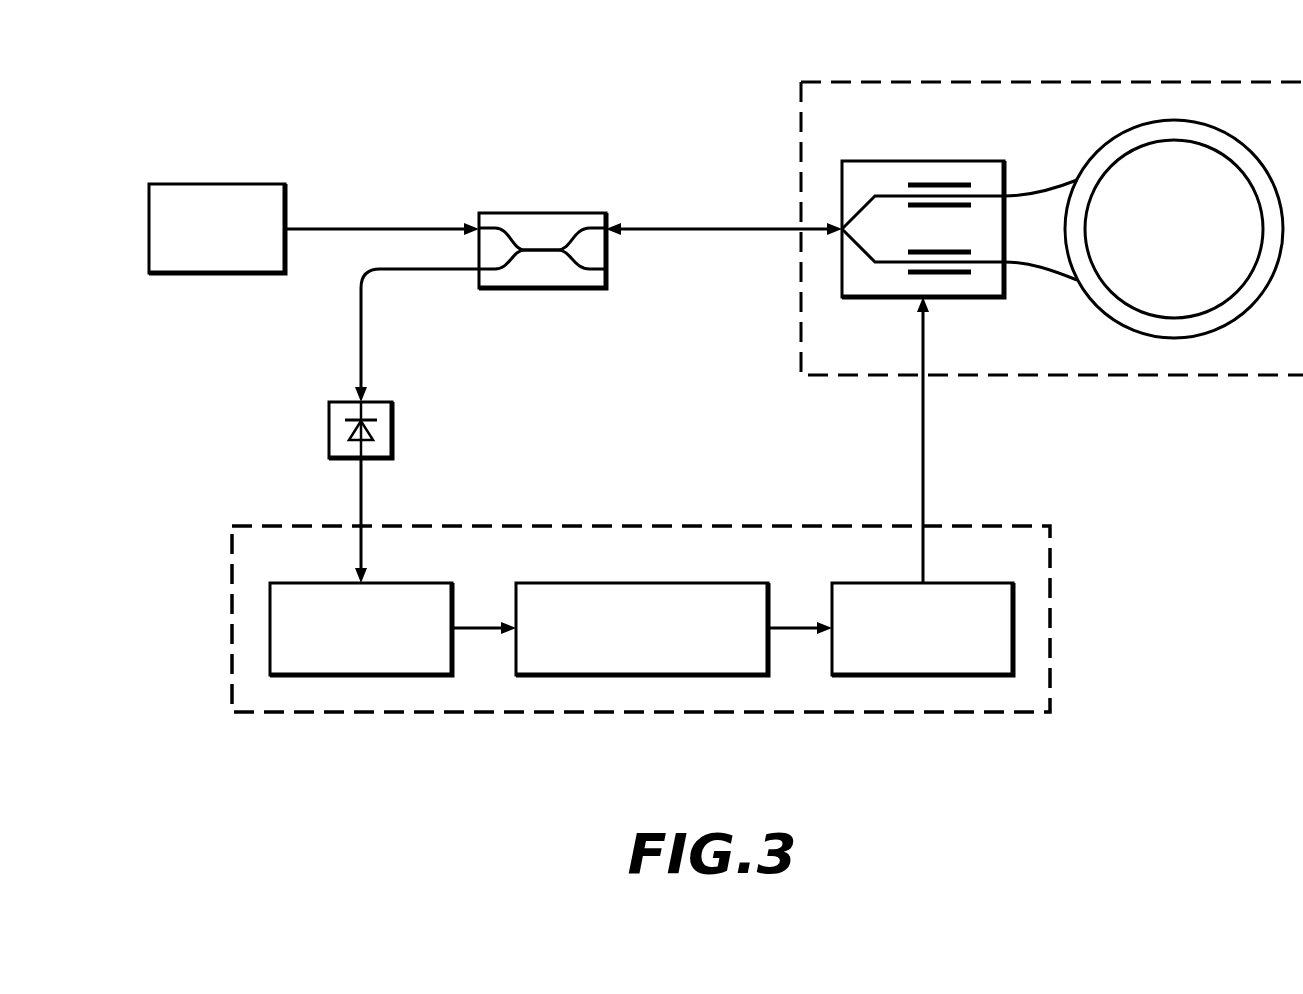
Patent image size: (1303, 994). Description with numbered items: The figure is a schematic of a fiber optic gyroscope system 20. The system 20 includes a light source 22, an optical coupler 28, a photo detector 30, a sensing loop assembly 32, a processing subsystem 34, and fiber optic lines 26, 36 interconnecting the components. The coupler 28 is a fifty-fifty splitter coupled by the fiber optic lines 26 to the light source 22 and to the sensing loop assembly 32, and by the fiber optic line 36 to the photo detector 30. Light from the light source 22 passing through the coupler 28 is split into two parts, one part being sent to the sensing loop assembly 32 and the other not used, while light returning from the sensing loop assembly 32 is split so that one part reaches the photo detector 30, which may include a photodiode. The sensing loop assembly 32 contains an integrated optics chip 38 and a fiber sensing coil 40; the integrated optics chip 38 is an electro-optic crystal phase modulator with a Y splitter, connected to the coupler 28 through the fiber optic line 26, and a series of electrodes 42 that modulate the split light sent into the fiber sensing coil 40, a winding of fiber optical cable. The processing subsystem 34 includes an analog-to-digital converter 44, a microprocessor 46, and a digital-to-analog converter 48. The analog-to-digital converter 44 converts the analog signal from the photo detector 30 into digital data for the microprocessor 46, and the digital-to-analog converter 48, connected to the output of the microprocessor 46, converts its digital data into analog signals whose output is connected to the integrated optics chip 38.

The fiber optic gyroscope system 20 is at (206, 86).
The light source 22 is at (184, 184).
The fiber optic lines 26 is at (358, 228).
The optical coupler 28 is at (512, 213).
The photo detector 30 is at (329, 430).
The sensing loop assembly 32 is at (838, 82).
The processing subsystem 34 is at (271, 526).
The fiber optic line 36 is at (358, 320).
The integrated optics chip 38 is at (912, 161).
The fiber sensing coil 40 is at (1100, 147).
The electrodes 42 is at (956, 275).
The analog-to-digital converter 44 is at (316, 583).
The microprocessor 46 is at (558, 583).
The digital-to-analog converter 48 is at (878, 583).